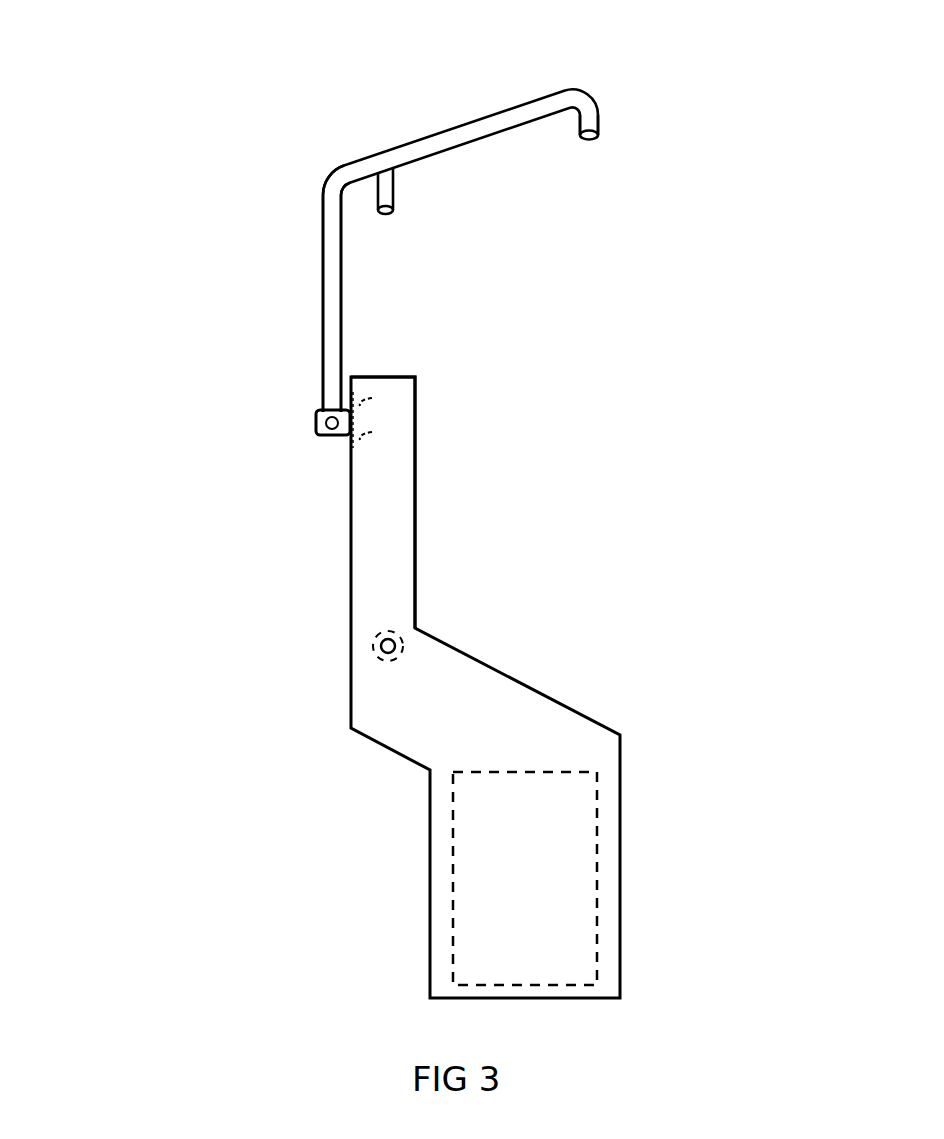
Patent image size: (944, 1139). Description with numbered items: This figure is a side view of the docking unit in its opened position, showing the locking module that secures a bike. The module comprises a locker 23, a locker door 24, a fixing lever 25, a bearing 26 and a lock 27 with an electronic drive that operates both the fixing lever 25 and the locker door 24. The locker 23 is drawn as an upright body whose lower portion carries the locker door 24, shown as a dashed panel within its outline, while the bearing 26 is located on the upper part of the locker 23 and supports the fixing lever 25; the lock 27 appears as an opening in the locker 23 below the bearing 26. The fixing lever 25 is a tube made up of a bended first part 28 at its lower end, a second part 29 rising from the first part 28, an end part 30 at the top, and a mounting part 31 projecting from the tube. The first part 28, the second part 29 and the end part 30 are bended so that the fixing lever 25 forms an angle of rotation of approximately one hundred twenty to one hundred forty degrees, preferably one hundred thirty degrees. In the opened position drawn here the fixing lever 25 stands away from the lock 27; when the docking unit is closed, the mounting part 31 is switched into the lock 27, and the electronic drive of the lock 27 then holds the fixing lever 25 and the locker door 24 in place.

The locker 23 is at (603, 793).
The locker door 24 is at (560, 917).
The fixing lever 25 is at (448, 142).
The bearing 26 is at (350, 420).
The lock 27 is at (388, 646).
The first part 28 is at (318, 413).
The second part 29 is at (330, 196).
The end part 30 is at (587, 108).
The mounting part 31 is at (395, 207).